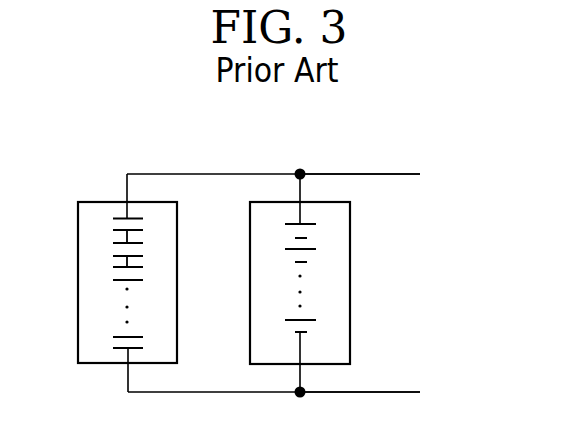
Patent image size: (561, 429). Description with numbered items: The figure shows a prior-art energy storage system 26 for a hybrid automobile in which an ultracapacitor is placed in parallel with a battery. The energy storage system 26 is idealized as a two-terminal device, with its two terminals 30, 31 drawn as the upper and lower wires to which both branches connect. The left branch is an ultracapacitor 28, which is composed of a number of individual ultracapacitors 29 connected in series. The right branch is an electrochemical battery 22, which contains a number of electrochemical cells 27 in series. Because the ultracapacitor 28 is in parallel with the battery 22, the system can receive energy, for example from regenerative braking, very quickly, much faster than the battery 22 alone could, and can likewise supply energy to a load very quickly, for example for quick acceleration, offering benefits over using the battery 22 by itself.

The energy storage system 26 is at (290, 130).
The ultracapacitor 28 is at (77, 250).
The individual ultracapacitors 29 is at (115, 272).
The battery 22 is at (350, 250).
The electrochemical cells 27 is at (310, 258).
The terminal 30 is at (392, 173).
The terminal 31 is at (395, 392).